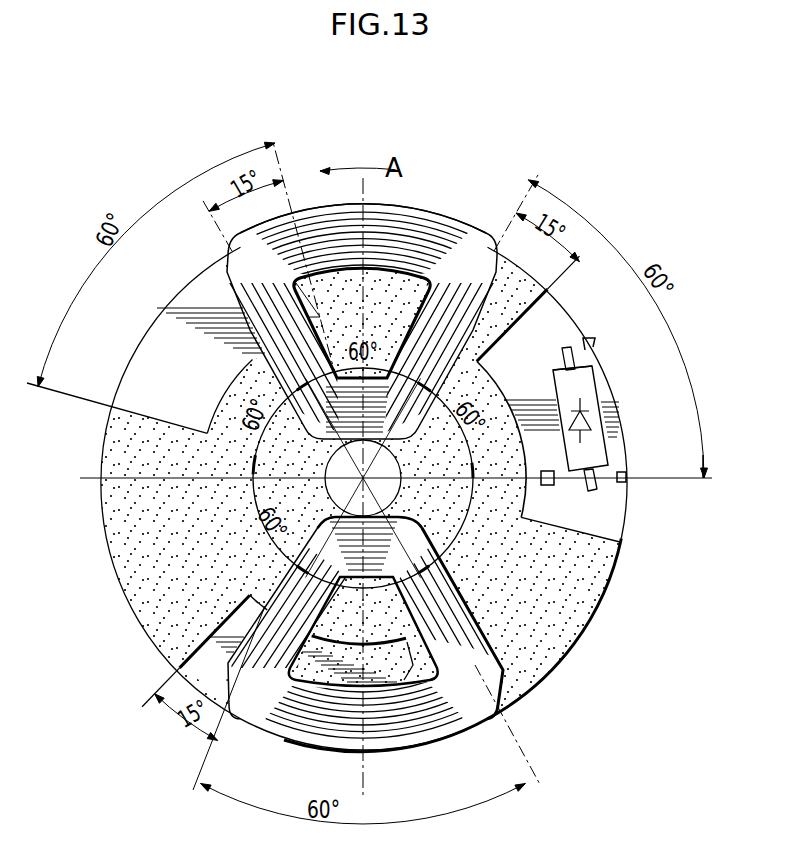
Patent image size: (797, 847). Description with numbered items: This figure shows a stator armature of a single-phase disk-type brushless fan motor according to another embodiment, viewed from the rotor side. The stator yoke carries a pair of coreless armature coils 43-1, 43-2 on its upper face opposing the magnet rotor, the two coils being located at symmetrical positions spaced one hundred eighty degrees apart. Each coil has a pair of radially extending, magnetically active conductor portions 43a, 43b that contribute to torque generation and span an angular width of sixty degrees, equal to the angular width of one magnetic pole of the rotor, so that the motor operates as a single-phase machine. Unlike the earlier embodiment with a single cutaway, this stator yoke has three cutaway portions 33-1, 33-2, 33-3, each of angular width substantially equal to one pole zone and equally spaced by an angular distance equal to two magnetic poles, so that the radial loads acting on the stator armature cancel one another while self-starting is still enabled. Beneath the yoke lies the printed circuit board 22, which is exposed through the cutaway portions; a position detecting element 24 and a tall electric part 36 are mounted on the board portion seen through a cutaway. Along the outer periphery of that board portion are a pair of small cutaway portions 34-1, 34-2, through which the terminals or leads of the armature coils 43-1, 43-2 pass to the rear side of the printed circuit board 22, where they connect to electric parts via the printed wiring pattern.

The printed circuit board 22 is at (603, 405).
The position detecting element 24 is at (553, 487).
The cutaway portion 33-1 is at (530, 310).
The cutaway portion 33-2 is at (404, 682).
The cutaway portion 33-3 is at (130, 413).
The small cutaway portion 34-1 is at (590, 344).
The small cutaway portion 34-2 is at (627, 478).
The tall electric part 36 is at (592, 455).
The armature coil 43-1 is at (427, 214).
The armature coil 43-2 is at (296, 710).
The magnetically active conductor portion 43a is at (260, 313).
The magnetically active conductor portion 43b is at (450, 333).